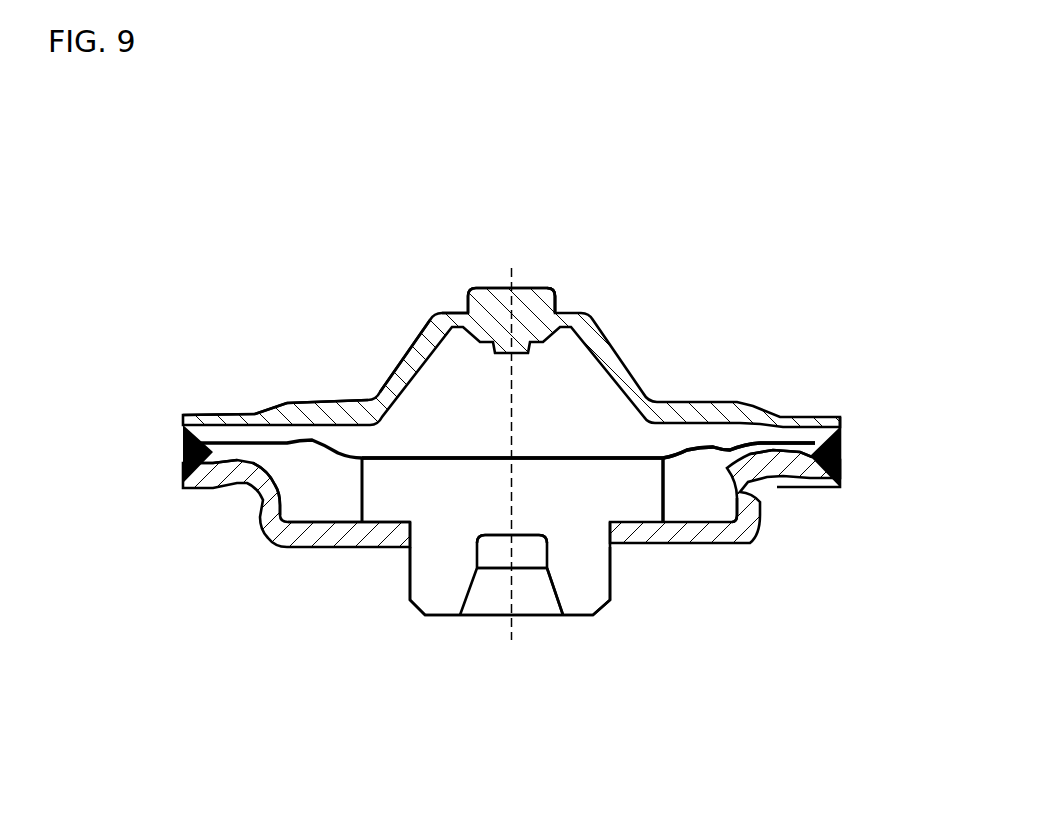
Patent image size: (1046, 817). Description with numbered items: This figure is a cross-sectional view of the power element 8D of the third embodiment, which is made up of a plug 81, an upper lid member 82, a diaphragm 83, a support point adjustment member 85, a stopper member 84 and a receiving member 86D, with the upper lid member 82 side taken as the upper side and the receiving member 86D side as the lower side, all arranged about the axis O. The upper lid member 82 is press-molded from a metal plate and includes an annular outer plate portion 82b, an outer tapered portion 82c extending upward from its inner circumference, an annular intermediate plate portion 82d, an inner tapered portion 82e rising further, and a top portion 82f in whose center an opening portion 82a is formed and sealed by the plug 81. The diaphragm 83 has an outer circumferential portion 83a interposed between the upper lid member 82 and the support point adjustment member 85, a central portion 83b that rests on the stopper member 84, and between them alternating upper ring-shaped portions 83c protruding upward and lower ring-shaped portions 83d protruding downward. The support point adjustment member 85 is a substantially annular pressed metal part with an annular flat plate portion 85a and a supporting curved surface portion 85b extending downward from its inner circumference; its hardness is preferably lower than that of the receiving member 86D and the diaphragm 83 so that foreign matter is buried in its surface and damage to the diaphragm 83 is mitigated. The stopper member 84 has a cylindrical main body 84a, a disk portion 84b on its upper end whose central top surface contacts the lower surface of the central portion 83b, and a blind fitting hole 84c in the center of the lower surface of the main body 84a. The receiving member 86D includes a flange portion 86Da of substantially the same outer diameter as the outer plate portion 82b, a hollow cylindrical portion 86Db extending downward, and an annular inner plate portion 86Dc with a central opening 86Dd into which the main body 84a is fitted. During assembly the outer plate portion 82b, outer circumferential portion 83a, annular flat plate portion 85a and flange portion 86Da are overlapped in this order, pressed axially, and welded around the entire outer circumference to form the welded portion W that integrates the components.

The power element 8D is at (697, 282).
The plug 81 is at (533, 300).
The upper lid member 82 is at (181, 412).
The opening portion 82a is at (488, 288).
The outer plate portion 82b is at (216, 413).
The outer tapered portion 82c is at (262, 410).
The intermediate plate portion 82d is at (332, 400).
The inner tapered portion 82e is at (400, 345).
The top portion 82f is at (448, 311).
The diaphragm 83 is at (672, 455).
The outer circumferential portion 83a is at (796, 430).
The central portion 83b is at (570, 455).
The upper ring-shaped portion 83c is at (702, 440).
The lower ring-shaped portion 83d is at (745, 482).
The stopper member 84 is at (608, 606).
The main body 84a is at (576, 598).
The disk portion 84b is at (647, 514).
The fitting hole 84c is at (530, 538).
The support point adjustment member 85 is at (796, 467).
The annular flat plate portion 85a is at (790, 452).
The supporting curved surface portion 85b is at (640, 512).
The receiving member 86D is at (832, 490).
The flange portion 86Da is at (210, 490).
The hollow cylindrical portion 86Db is at (250, 505).
The inner plate portion 86Dc is at (335, 548).
The central opening 86Dd is at (420, 540).
The axis O is at (512, 440).
The welded portion W is at (846, 445).